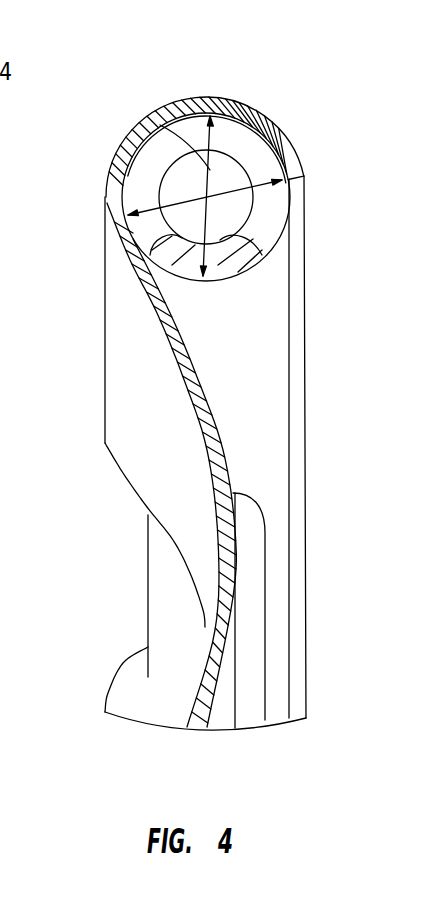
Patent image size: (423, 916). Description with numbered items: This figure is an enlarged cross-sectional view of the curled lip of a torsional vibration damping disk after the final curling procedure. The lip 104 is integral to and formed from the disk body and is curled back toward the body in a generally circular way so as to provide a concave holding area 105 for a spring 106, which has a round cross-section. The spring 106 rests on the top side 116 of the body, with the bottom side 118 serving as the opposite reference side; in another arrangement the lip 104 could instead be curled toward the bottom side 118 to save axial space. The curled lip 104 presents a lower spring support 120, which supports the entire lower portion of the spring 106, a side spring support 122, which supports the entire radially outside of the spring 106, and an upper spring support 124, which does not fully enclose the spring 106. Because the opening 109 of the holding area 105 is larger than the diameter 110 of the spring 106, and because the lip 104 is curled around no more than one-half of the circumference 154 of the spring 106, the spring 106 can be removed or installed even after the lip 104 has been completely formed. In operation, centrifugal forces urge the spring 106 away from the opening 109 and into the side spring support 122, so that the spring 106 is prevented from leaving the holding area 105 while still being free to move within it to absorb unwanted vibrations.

The lip 104 is at (312, 77).
The concave holding area 105 is at (266, 279).
The spring 106 is at (265, 220).
The opening 109 is at (163, 173).
The diameter 110 is at (157, 110).
The top side 116 is at (305, 627).
The bottom side 118 is at (105, 358).
The lower spring support 120 is at (105, 195).
The side spring support 122 is at (190, 97).
The upper spring support 124 is at (292, 157).
The circumference 154 is at (223, 279).